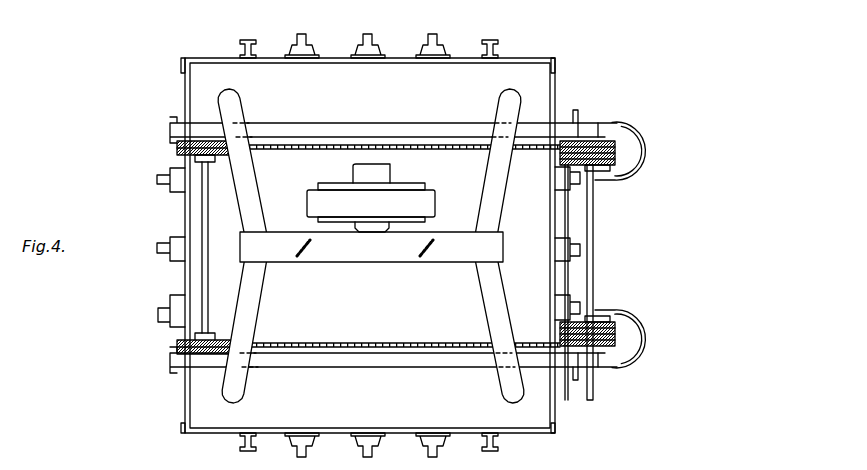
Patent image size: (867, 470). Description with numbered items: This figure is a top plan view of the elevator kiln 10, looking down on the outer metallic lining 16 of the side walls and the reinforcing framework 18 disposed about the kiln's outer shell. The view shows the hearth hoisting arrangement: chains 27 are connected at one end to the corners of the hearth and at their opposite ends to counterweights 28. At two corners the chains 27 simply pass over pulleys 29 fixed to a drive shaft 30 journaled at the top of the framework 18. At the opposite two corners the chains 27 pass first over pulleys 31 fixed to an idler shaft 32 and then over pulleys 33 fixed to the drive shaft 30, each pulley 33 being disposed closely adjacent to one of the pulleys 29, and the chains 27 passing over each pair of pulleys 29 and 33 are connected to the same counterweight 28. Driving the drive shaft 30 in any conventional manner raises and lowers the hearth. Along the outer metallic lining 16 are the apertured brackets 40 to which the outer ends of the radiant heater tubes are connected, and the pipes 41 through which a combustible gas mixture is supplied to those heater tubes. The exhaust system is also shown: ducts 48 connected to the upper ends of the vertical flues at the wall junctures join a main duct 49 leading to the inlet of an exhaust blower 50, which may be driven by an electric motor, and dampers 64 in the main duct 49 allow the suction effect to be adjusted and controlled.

The elevator kiln 10 is at (575, 72).
The outer metallic lining 16 is at (521, 62).
The reinforcing framework 18 is at (254, 45).
The chains 27 is at (314, 150).
The counterweights 28 is at (647, 153).
The pulleys 29 is at (607, 171).
The drive shaft 30 is at (594, 252).
The pulleys 31 is at (178, 147).
The idler shaft 32 is at (205, 214).
The pulleys 33 is at (612, 143).
The apertured brackets 40 is at (310, 46).
The pipes 41 is at (378, 40).
The ducts 48 is at (256, 208).
The main duct 49 is at (455, 262).
The exhaust blower 50 is at (400, 182).
The dampers 64 is at (305, 264).